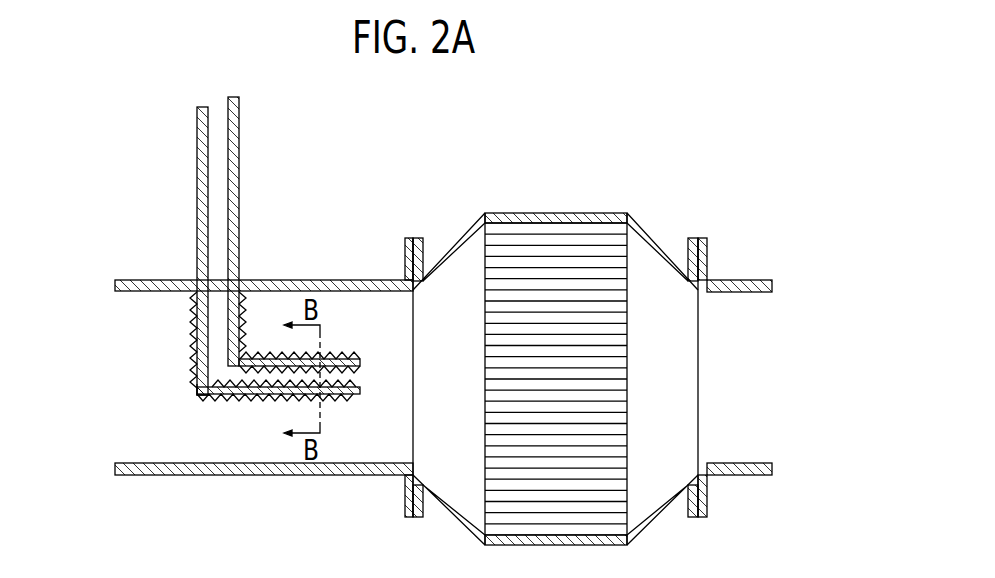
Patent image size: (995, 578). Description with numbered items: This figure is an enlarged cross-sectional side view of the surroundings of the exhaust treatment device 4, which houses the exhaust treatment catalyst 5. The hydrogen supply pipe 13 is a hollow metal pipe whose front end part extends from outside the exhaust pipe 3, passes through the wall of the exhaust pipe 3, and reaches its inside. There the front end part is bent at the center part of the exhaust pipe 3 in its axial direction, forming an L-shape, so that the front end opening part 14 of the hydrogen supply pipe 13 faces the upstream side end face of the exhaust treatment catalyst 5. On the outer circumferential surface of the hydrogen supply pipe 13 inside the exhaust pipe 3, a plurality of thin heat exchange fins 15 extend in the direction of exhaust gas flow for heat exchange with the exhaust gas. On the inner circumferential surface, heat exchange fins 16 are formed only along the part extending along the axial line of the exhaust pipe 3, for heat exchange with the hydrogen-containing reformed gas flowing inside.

The exhaust pipe 3 is at (145, 473).
The exhaust treatment device 4 is at (645, 221).
The exhaust treatment catalyst 5 is at (542, 277).
The hydrogen supply pipe 13 is at (239, 167).
The front end opening part 14 is at (362, 377).
The heat exchange fins 15 is at (190, 366).
The heat exchange fins 16 is at (210, 398).